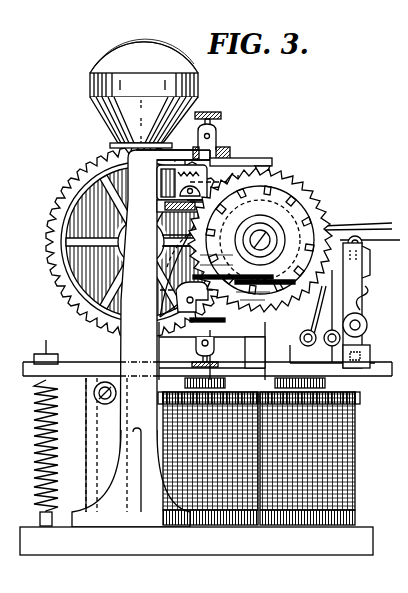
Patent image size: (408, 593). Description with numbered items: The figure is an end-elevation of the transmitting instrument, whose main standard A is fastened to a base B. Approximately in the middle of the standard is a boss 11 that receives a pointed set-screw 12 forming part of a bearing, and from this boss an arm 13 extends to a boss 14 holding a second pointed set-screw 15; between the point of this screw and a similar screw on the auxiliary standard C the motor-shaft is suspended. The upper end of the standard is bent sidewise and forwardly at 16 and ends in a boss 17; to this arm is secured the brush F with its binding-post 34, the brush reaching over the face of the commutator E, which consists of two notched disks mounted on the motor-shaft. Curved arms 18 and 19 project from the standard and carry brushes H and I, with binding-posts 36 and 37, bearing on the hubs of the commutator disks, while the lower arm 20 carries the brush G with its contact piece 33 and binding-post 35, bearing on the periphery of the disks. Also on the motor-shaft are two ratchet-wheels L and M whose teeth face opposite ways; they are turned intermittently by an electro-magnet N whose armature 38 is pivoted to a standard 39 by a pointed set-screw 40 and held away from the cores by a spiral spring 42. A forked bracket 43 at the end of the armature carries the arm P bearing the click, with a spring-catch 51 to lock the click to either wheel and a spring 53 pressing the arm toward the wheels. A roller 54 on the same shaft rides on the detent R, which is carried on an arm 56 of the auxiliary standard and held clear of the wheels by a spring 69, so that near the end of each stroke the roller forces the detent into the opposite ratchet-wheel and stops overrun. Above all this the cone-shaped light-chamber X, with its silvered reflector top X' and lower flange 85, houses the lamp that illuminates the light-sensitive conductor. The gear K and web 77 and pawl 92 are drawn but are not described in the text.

The large gear wheel K is at (52, 242).
The gear web 77 is at (72, 212).
The boss 11 is at (156, 247).
The pointed set-screw 12 is at (136, 264).
The main standard A is at (141, 338).
The standard 39 is at (106, 445).
The top of the light-chamber X' is at (144, 59).
The light-chamber X is at (144, 122).
The laterally-projecting flange 85 is at (102, 147).
The binding-post 34 is at (218, 135).
The boss 17 is at (229, 150).
The bent upper end (arm) 16 is at (173, 148).
The brush F is at (264, 154).
The pawl 92 is at (270, 168).
The curved arm 18 is at (182, 188).
The binding-post 36 is at (181, 192).
The ratchet-wheel L is at (289, 215).
The ratchet-wheel M is at (370, 229).
The arm 13 is at (201, 233).
The binding-post 37 is at (176, 298).
The commutator E is at (303, 191).
The brush H is at (233, 234).
The brush I is at (265, 289).
The boss 14 is at (275, 234).
The pointed set-screw 15 is at (270, 247).
The curved arm 19 is at (265, 275).
The brush G is at (283, 306).
The auxiliary standard C is at (255, 352).
The binding-post 35 is at (214, 350).
The arm 20 is at (180, 335).
The detent R is at (330, 305).
The contact piece 33 is at (294, 320).
The arm P is at (332, 305).
The spring-catch 51 is at (370, 260).
The spring 53 is at (368, 306).
The roller 54 is at (368, 325).
The arm 56 is at (300, 339).
The spring 69 is at (328, 345).
The forked bracket 43 is at (370, 353).
The armature 38 is at (86, 372).
The spiral spring 42 is at (36, 421).
The pointed set-screw 40 is at (94, 394).
The electric motor (electro-magnet) N is at (352, 452).
The base B is at (196, 541).